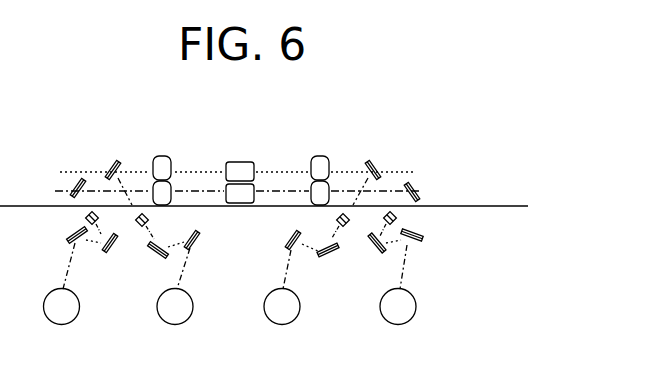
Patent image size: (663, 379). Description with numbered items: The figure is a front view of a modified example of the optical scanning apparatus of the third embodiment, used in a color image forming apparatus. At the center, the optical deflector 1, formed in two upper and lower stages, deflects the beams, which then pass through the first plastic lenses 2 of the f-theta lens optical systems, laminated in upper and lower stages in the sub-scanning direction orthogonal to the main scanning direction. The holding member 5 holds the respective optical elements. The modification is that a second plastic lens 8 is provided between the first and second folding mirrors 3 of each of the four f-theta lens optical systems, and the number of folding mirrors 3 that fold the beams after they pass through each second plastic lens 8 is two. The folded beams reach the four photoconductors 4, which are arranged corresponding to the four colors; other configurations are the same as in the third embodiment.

The optical deflector 1 is at (256, 172).
The first plastic lens 2 is at (174, 180).
The folding mirror 3 is at (107, 168).
The photoconductor 4 is at (63, 325).
The holding member 5 is at (472, 205).
The second plastic lens 8 is at (87, 219).